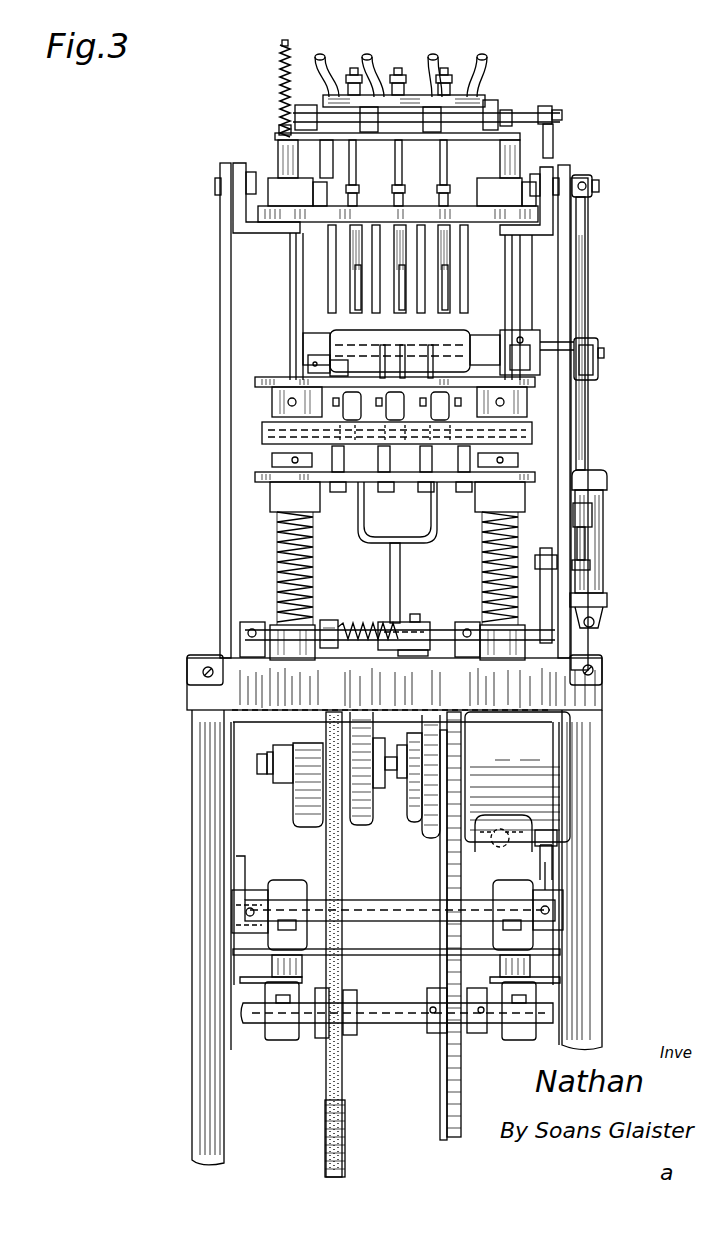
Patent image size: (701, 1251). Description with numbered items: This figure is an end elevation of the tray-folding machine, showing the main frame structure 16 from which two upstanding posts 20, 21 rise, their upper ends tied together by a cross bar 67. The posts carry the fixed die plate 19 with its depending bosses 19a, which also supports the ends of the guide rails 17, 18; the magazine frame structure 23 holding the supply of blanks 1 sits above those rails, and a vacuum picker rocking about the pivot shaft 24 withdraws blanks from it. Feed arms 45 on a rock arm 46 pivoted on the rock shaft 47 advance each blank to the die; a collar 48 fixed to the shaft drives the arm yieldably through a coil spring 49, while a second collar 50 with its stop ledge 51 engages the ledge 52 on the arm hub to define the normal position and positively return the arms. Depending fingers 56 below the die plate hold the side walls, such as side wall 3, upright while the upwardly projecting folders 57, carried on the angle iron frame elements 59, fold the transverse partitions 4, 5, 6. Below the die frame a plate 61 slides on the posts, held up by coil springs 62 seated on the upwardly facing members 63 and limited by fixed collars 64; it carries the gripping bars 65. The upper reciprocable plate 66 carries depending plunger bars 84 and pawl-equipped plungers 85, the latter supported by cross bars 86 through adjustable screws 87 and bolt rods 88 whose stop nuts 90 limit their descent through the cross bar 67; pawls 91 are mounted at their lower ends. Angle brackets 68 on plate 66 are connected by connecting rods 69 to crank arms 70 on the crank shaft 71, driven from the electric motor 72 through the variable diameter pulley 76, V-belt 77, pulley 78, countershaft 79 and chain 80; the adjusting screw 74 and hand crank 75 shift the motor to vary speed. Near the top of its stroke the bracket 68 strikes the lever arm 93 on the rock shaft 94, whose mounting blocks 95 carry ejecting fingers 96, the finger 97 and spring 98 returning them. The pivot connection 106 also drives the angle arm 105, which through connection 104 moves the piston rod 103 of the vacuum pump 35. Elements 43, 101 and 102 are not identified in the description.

The blank 1 is at (458, 108).
The side wall 3 is at (348, 330).
The transverse partition 4 is at (341, 368).
The transverse partition 5 is at (382, 347).
The transverse partition 6 is at (432, 347).
The main frame structure 16 is at (187, 715).
The guide rail 17 is at (308, 362).
The guide rail 18 is at (500, 335).
The die plate 19 is at (275, 378).
The depending bosses 19a is at (272, 402).
The upstanding post 20 is at (290, 280).
The upstanding post 21 is at (490, 278).
The skeleton frame structure 23 is at (487, 100).
The pivot shaft 24 is at (548, 335).
The pump 35 is at (603, 547).
The finger 43 is at (403, 347).
The feed arms 45 is at (358, 518).
The rock arm 46 is at (400, 575).
The rock shaft 47 is at (440, 630).
The collar 48 is at (332, 620).
The coil spring 49 is at (362, 625).
The collar 50 is at (425, 622).
The stop ledge 51 is at (420, 656).
The stop flange 52 is at (414, 614).
The depending fingers 56 is at (336, 480).
The folders 57 is at (397, 406).
The angle iron frame elements 59 is at (532, 428).
The plate 61 is at (255, 477).
The coil springs 62 is at (277, 555).
The upwardly facing members 63 is at (266, 622).
The collars 64 is at (272, 458).
The gripping bars 65 is at (405, 486).
The plate 66 is at (538, 214).
The cross bar 67 is at (275, 134).
The angle brackets 68 is at (233, 163).
The connecting rods 69 is at (219, 282).
The crank arms 70 is at (244, 880).
The crank shaft 71 is at (398, 884).
The electric motor 72 is at (522, 762).
The adjusting screw 74 is at (556, 876).
The hand crank 75 is at (503, 833).
The variable diameter pulley 76 is at (293, 804).
The V-belt 77 is at (326, 838).
The pulley 78 is at (345, 1098).
The countershaft 79 is at (405, 1025).
The chain 80 is at (447, 958).
The plunger bars 84 is at (330, 298).
The plungers 85 is at (350, 250).
The cross bars 86 is at (349, 190).
The adjustable screws 87 is at (402, 190).
The bolt rods 88 is at (330, 98).
The stop nuts 90 is at (428, 95).
The pawls 91 is at (355, 278).
The lever arm 93 is at (556, 125).
The rock shaft 94 is at (548, 104).
The mounting blocks 95 is at (400, 141).
The ejecting fingers 96 is at (349, 158).
The finger 97 is at (278, 68).
The spring 98 is at (278, 90).
The piston 101 is at (582, 540).
The link 102 is at (544, 590).
The piston rod 103 is at (588, 440).
The connection 104 is at (598, 342).
The arm 105 is at (590, 238).
The pivot connection 106 is at (595, 176).